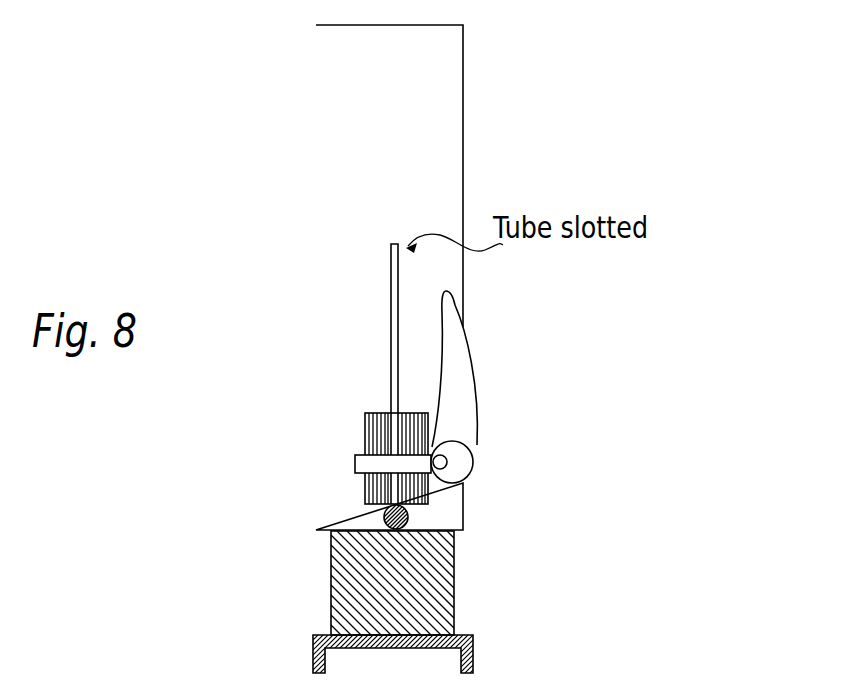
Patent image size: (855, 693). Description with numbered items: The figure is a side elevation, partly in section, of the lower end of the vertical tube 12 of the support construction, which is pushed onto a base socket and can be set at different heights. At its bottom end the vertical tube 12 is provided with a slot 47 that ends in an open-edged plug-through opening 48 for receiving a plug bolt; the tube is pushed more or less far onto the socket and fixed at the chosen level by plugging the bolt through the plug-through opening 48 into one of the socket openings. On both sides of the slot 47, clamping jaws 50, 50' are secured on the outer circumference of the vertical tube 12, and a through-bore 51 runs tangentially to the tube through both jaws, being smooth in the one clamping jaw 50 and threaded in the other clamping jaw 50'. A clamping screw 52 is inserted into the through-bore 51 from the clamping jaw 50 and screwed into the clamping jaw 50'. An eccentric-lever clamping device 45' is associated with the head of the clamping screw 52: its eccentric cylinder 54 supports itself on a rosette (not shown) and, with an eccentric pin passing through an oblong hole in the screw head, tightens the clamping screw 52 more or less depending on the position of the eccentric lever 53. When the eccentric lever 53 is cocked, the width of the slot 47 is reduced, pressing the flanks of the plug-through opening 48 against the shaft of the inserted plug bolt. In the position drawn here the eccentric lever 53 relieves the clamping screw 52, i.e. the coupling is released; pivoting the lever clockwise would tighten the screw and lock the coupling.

The vertical tube 12 is at (443, 52).
The slot 47 is at (382, 338).
The clamping jaw 50' is at (342, 439).
The through-bore 51 is at (413, 465).
The plug-through opening 48 is at (384, 517).
The eccentric lever 53 is at (481, 369).
The eccentric-lever clamping device 45' is at (584, 369).
The eccentric cylinder 54 is at (474, 453).
The clamping screw 52 is at (474, 471).
The clamping jaw 50 is at (615, 517).